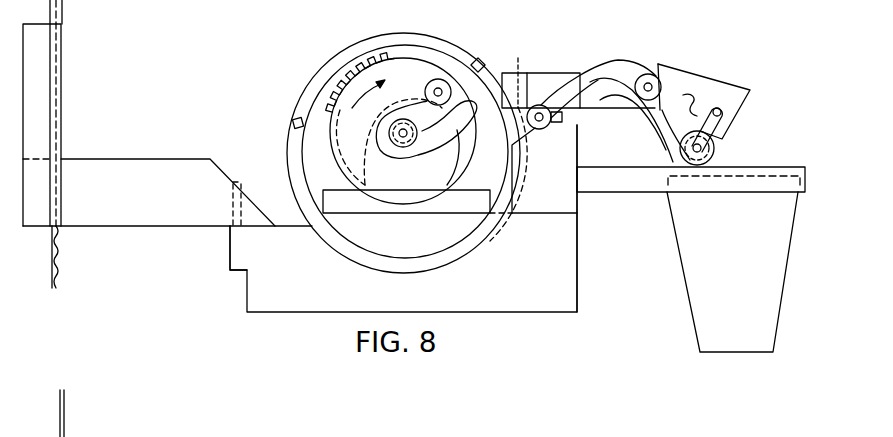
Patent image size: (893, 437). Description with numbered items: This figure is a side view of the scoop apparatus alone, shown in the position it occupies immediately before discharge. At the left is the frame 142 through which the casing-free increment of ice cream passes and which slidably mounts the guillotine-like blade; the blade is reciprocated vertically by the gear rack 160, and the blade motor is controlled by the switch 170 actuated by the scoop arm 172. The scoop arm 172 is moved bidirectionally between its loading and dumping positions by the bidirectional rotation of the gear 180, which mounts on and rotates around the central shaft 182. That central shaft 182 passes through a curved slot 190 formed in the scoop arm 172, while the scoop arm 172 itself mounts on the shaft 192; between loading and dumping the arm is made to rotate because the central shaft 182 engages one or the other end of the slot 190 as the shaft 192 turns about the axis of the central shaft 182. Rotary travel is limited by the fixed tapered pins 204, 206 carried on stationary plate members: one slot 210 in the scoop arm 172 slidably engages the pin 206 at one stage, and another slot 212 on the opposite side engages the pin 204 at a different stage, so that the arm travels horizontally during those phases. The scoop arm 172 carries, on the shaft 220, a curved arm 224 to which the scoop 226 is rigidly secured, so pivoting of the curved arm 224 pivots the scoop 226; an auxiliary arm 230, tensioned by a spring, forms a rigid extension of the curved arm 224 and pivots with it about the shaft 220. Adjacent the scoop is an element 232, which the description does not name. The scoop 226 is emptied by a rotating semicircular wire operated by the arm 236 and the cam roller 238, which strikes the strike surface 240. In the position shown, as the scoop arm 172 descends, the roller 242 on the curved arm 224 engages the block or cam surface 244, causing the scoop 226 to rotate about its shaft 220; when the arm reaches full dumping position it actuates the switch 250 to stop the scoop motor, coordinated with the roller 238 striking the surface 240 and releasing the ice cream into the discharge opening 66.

The discharge opening 66 is at (707, 306).
The frame 142 is at (47, 125).
The gear rack 160 is at (57, 260).
The switch 170 is at (238, 250).
The scoop arm 172 is at (575, 75).
The gear 180 is at (397, 77).
The central shaft 182 is at (406, 140).
The curved slot 190 is at (430, 140).
The shaft 192 is at (438, 88).
The fixed tapered pin 204 is at (293, 116).
The fixed tapered pin 206 is at (480, 61).
The slot 210 is at (532, 82).
The slot 212 is at (518, 72).
The shaft 220 is at (672, 84).
The curved arm 224 is at (592, 84).
The scoop 226 is at (722, 82).
The auxiliary arm 230 is at (688, 116).
The slot 232 is at (736, 126).
The arm 236 is at (718, 149).
The cam roller 238 is at (682, 157).
The strike surface 240 is at (724, 185).
The roller 242 is at (540, 130).
The cam surface 244 is at (578, 200).
The switch 250 is at (563, 120).